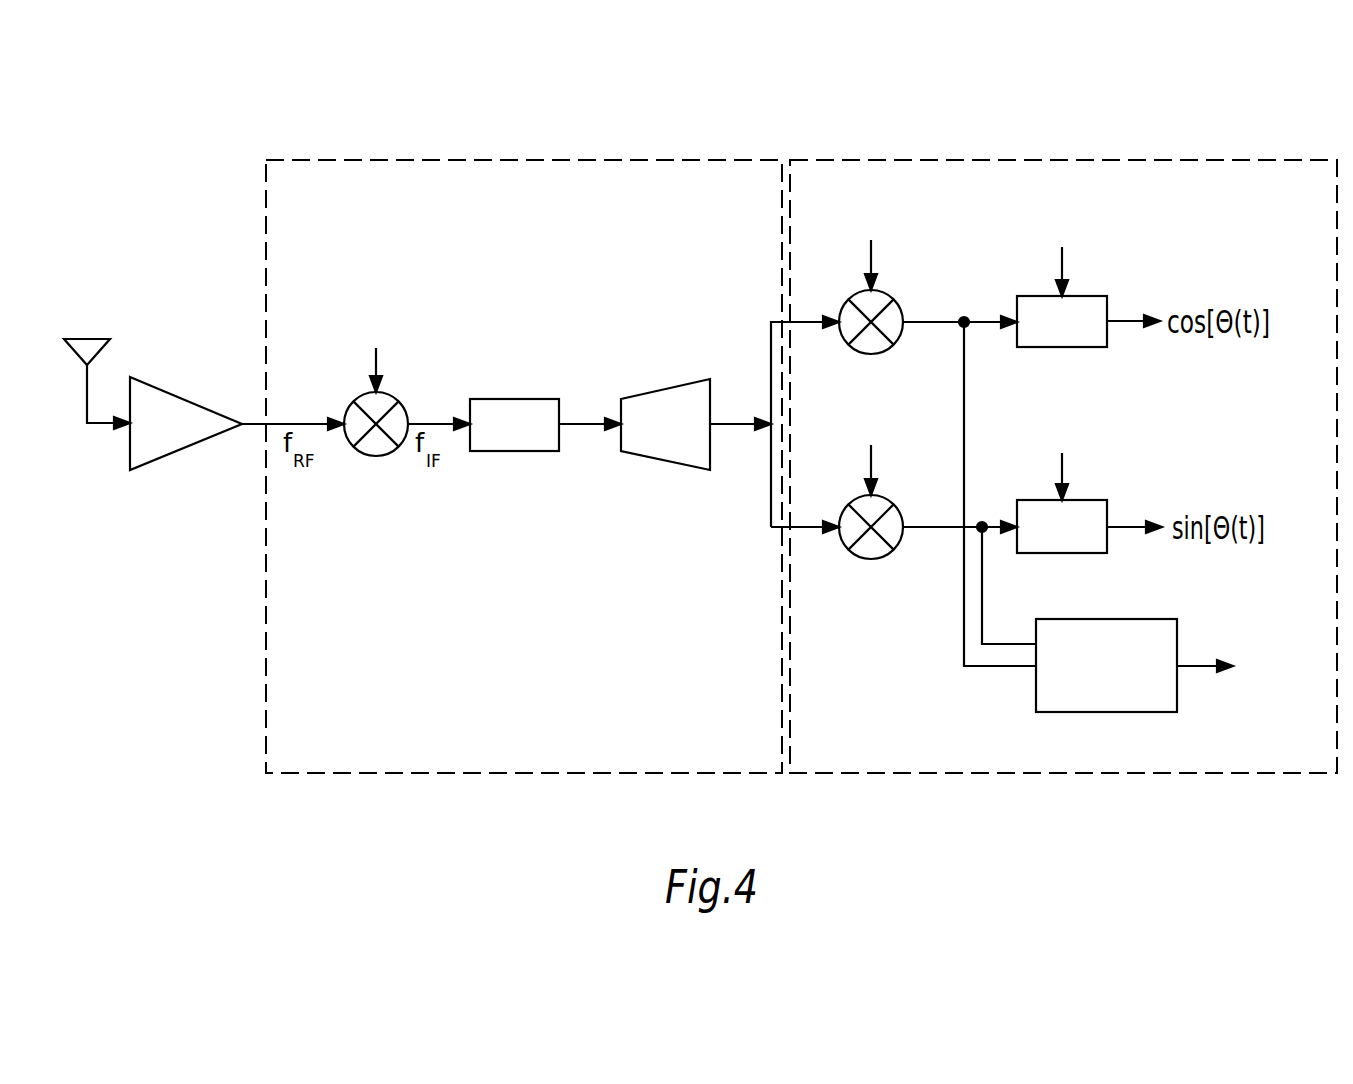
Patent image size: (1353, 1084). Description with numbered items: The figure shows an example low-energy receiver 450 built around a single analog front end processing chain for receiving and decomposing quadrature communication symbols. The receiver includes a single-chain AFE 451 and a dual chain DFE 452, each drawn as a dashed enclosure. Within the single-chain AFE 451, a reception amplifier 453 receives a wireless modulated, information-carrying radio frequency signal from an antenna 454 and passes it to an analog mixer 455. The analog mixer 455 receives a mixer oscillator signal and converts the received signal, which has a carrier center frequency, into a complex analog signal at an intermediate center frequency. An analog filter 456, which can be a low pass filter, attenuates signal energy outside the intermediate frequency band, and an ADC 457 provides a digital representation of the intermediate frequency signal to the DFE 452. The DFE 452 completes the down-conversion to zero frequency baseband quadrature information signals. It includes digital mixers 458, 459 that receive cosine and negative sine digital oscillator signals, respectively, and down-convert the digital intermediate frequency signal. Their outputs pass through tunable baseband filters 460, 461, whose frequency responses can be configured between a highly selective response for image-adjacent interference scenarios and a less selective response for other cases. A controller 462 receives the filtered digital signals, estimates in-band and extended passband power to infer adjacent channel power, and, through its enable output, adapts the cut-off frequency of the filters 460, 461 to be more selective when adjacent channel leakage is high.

The receiver 450 is at (190, 112).
The single-chain AFE 451 is at (505, 160).
The dual chain DFE 452 is at (1043, 160).
The reception amplifier 453 is at (187, 398).
The antenna 454 is at (87, 339).
The analog mixer 455 is at (396, 400).
The analog filter 456 is at (515, 399).
The ADC 457 is at (665, 389).
The digital mixer 458 is at (895, 344).
The digital mixer 459 is at (895, 549).
The tunable baseband filter 460 is at (1062, 348).
The tunable baseband filter 461 is at (1062, 554).
The controller 462 is at (1106, 713).